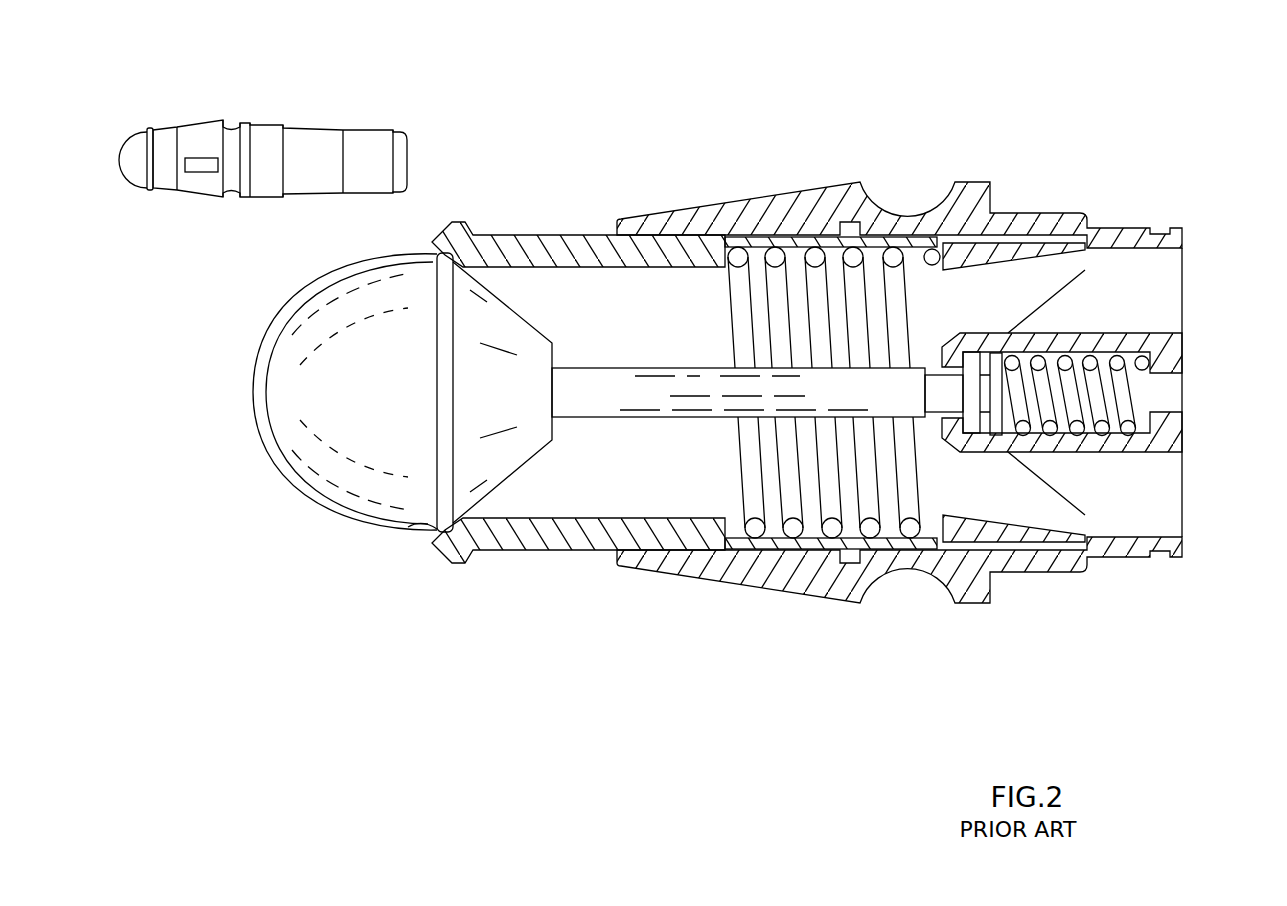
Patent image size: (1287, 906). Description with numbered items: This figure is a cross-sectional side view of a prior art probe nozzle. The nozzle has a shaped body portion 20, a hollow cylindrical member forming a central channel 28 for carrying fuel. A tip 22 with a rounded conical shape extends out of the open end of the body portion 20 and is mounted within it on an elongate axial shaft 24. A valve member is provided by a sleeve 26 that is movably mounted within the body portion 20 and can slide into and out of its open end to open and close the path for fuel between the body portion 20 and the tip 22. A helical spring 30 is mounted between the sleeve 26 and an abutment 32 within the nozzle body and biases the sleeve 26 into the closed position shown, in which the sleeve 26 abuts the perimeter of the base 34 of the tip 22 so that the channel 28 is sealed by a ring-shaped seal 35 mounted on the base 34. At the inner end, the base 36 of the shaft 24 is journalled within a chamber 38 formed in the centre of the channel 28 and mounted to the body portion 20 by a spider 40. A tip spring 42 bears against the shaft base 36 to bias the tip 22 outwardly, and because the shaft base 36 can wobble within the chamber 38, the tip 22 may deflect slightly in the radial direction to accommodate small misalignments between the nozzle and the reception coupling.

The body portion 20 is at (327, 145).
The tip 22 is at (118, 163).
The axial shaft 24 is at (678, 378).
The sleeve 26 is at (547, 234).
The central channel 28 is at (1016, 488).
The helical spring 30 is at (870, 540).
The abutment 32 is at (995, 535).
The base of the nozzle tip 34 is at (413, 527).
The ring-shaped seal 35 is at (450, 260).
The shaft base 36 is at (938, 382).
The chamber 38 is at (1141, 397).
The spider 40 is at (1157, 320).
The tip spring 42 is at (1090, 362).